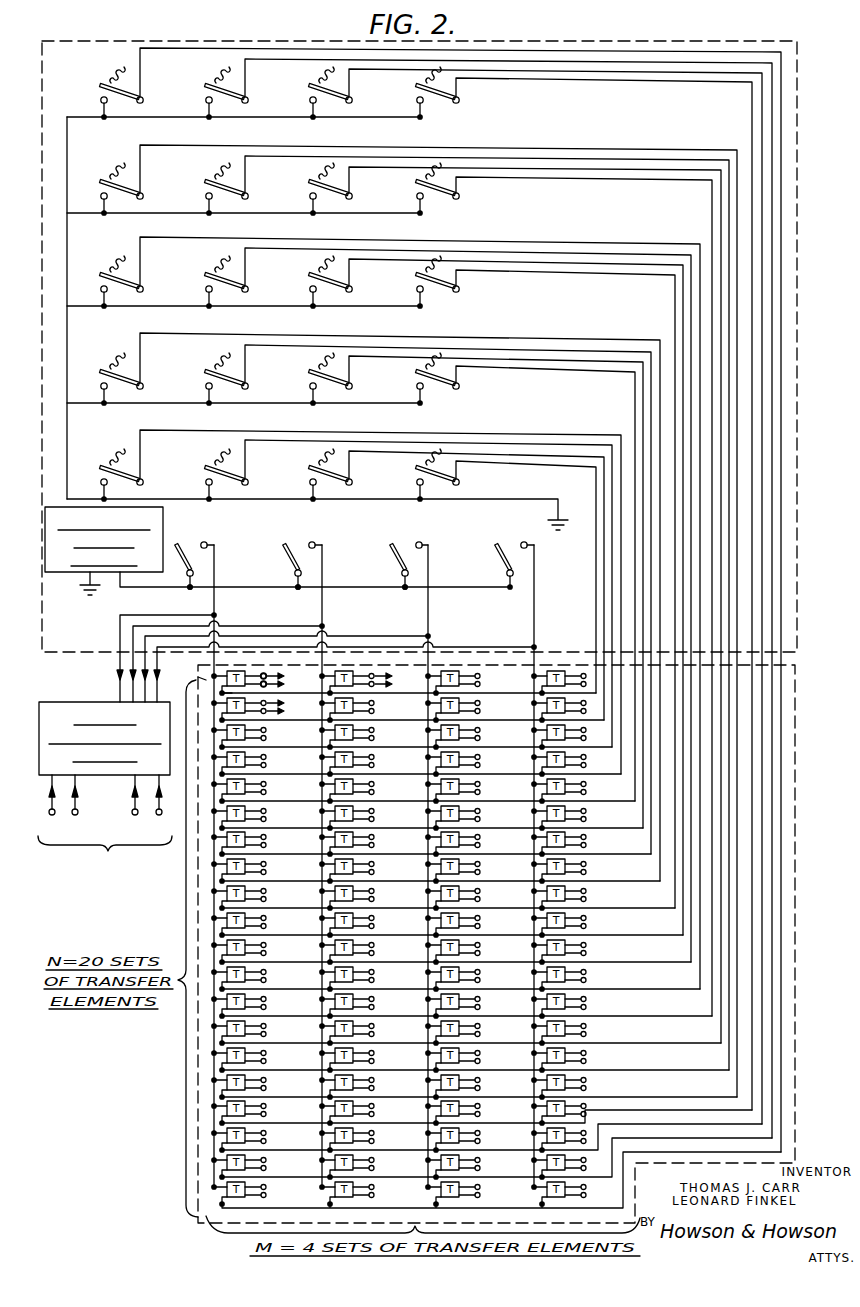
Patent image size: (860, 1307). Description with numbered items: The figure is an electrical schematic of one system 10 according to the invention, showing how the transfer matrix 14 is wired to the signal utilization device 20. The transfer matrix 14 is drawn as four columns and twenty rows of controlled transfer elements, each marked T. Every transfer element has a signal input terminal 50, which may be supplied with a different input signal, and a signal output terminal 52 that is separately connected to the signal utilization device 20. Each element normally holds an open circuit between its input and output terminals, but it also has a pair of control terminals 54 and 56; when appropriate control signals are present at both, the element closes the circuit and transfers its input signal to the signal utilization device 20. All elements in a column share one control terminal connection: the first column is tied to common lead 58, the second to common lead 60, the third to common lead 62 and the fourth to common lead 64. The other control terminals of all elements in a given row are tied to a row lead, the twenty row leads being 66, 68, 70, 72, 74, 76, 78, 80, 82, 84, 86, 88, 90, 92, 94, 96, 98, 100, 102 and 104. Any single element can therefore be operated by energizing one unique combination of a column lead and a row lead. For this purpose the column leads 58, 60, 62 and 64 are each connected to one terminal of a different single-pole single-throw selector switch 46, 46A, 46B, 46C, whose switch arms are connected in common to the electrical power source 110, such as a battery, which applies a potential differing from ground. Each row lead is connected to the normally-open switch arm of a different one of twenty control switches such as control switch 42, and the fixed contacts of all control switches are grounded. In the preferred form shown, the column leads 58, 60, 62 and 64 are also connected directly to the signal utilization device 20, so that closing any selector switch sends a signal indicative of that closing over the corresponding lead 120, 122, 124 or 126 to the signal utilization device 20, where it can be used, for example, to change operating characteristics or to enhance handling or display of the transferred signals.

The switch matrix (first dashed enclosure) 10 is at (800, 364).
The transfer matrix 14 is at (800, 775).
The signal utilization device 20 is at (54, 702).
The control switch 42 is at (101, 87).
The selector switch 46 is at (186, 545).
The selector switch 46A is at (304, 538).
The selector switch 46B is at (409, 542).
The selector switch 46C is at (514, 542).
The signal input terminal 50 is at (263, 673).
The signal output terminal 52 is at (266, 685).
The control terminal 54 is at (194, 680).
The control terminal 56 is at (221, 692).
The common lead 58 is at (219, 575).
The common lead 60 is at (326, 580).
The common lead 62 is at (431, 580).
The common lead 64 is at (537, 583).
The row common lead 66 is at (404, 678).
The row common lead 68 is at (508, 716).
The row common lead 70 is at (508, 743).
The row common lead 72 is at (508, 770).
The row common lead 74 is at (508, 797).
The row common lead 76 is at (508, 824).
The row common lead 78 is at (508, 850).
The row common lead 80 is at (508, 877).
The row common lead 82 is at (508, 904).
The row common lead 84 is at (508, 931).
The row common lead 86 is at (508, 958).
The row common lead 88 is at (508, 985).
The row common lead 90 is at (508, 1012).
The row common lead 92 is at (508, 1039).
The row common lead 94 is at (508, 1066).
The row common lead 96 is at (508, 1093).
The row common lead 98 is at (508, 1119).
The row common lead 100 is at (508, 1146).
The row common lead 102 is at (508, 1173).
The row common lead 104 is at (508, 1200).
The electrical power source 110 is at (165, 512).
The lead 120 is at (175, 615).
The lead 122 is at (295, 624).
The lead 124 is at (370, 635).
The lead 126 is at (481, 646).